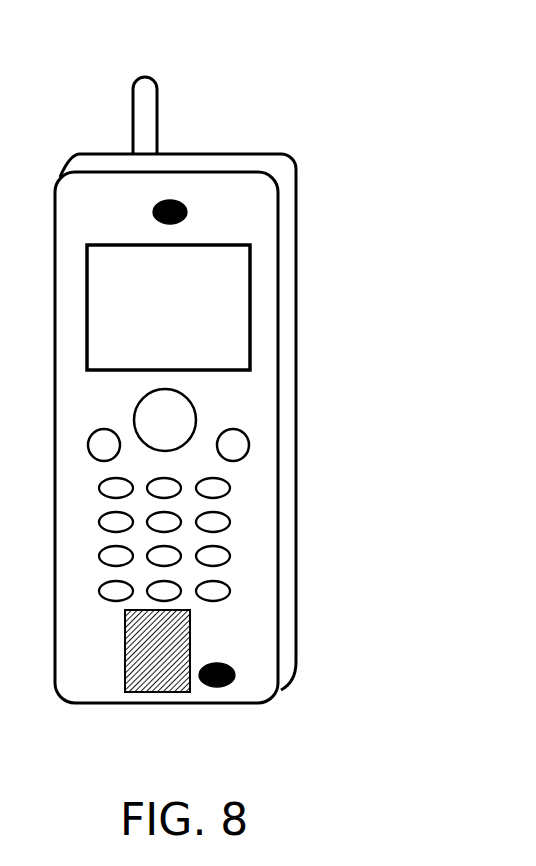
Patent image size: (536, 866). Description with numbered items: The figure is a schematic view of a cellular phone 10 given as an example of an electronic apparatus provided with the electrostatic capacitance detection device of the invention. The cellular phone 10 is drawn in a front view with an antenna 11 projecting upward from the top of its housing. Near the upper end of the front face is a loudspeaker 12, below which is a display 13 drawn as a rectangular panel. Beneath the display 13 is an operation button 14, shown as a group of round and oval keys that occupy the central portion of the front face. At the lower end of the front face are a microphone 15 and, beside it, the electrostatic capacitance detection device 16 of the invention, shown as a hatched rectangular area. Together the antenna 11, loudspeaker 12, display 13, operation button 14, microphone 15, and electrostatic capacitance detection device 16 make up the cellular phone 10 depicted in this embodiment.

The cellular phone 10 is at (363, 188).
The antenna 11 is at (157, 125).
The loudspeaker 12 is at (187, 207).
The display 13 is at (250, 310).
The operation button 14 is at (312, 382).
The microphone 15 is at (223, 686).
The electrostatic capacitance detection device 16 is at (147, 693).